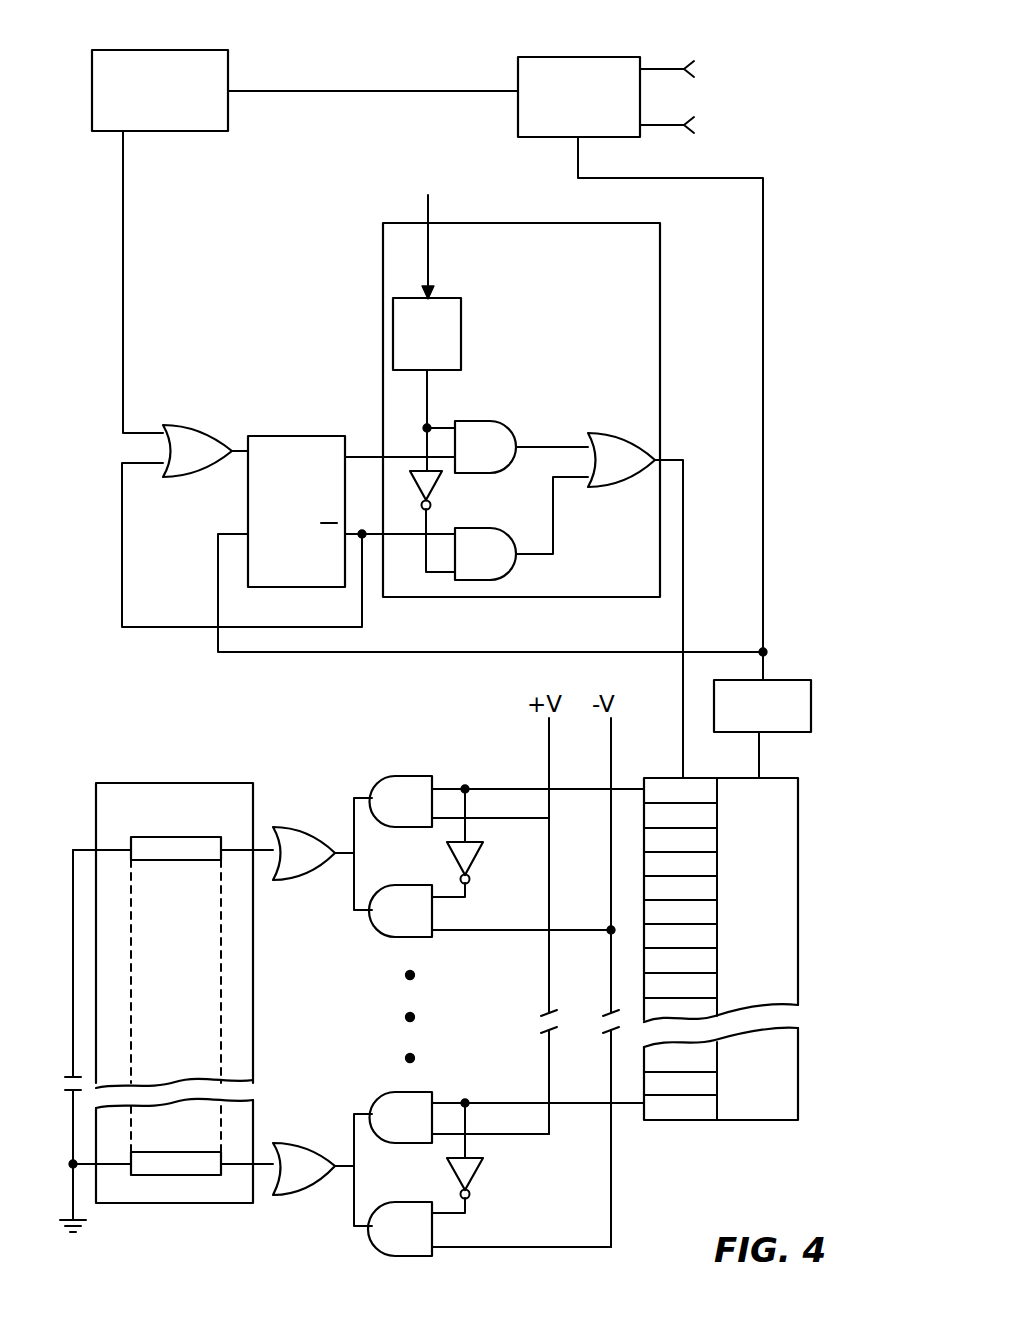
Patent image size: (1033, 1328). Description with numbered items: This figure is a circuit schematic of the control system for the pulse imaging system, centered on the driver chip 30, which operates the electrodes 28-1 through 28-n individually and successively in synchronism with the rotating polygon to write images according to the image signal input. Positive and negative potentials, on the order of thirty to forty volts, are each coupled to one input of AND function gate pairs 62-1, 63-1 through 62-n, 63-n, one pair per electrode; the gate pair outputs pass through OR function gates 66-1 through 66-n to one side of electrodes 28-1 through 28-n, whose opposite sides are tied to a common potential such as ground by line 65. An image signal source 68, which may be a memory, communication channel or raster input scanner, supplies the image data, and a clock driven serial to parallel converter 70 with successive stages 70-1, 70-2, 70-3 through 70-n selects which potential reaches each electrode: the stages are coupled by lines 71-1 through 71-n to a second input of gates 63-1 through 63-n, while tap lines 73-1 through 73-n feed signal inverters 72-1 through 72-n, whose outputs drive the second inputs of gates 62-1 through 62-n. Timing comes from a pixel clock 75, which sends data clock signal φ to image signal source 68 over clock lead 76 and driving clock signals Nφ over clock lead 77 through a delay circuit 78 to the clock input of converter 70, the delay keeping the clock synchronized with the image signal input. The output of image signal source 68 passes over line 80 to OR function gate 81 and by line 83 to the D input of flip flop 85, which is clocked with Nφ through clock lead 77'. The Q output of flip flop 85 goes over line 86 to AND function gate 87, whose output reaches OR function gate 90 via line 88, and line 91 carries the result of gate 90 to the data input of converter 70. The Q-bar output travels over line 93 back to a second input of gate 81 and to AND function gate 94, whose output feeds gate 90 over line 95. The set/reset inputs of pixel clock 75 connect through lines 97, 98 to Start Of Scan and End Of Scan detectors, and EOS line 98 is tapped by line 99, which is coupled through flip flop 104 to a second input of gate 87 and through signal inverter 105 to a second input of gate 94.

The driver chip 30 is at (100, 550).
The image signal source 68 is at (150, 50).
The pixel clock 75 is at (563, 57).
The clock lead 76 is at (322, 97).
The clock lead 77 is at (693, 394).
The clock lead 77' is at (492, 595).
The delay circuit 78 is at (778, 680).
The line 80 is at (123, 300).
The OR function gate 81 is at (193, 425).
The line 83 is at (234, 459).
The flip flop 85 is at (265, 436).
The line 86 is at (354, 436).
The AND function gate 87 is at (480, 421).
The line 88 is at (540, 447).
The OR function gate 90 is at (614, 433).
The line 91 is at (683, 460).
The line 93 is at (148, 627).
The AND function gate 94 is at (514, 562).
The line 95 is at (553, 498).
The line 97 is at (660, 69).
The EOS line 98 is at (657, 125).
The line 99 is at (427, 386).
The flip flop 104 is at (461, 318).
The signal inverter 105 is at (440, 480).
The serial to parallel converter 70 is at (814, 812).
The converter stage 70-1 is at (723, 792).
The converter stage 70-2 is at (723, 817).
The converter stage 70-3 is at (723, 842).
The converter stage 70-n is at (723, 1108).
The line 65 is at (73, 848).
The electrode 28-1 is at (165, 837).
The electrode 28-n is at (165, 1152).
The OR function gate 66-1 is at (318, 827).
The OR function gate 66-n is at (318, 1143).
The AND function gate 63-1 is at (390, 762).
The AND function gate 63-n is at (390, 1078).
The AND function gate 62-1 is at (378, 932).
The AND function gate 62-n is at (378, 1248).
The line 71-1 is at (514, 789).
The line 71-n is at (514, 1103).
The signal inverter 72-1 is at (478, 850).
The signal inverter 72-n is at (478, 1166).
The line 73-1 is at (460, 900).
The line 73-n is at (460, 1216).